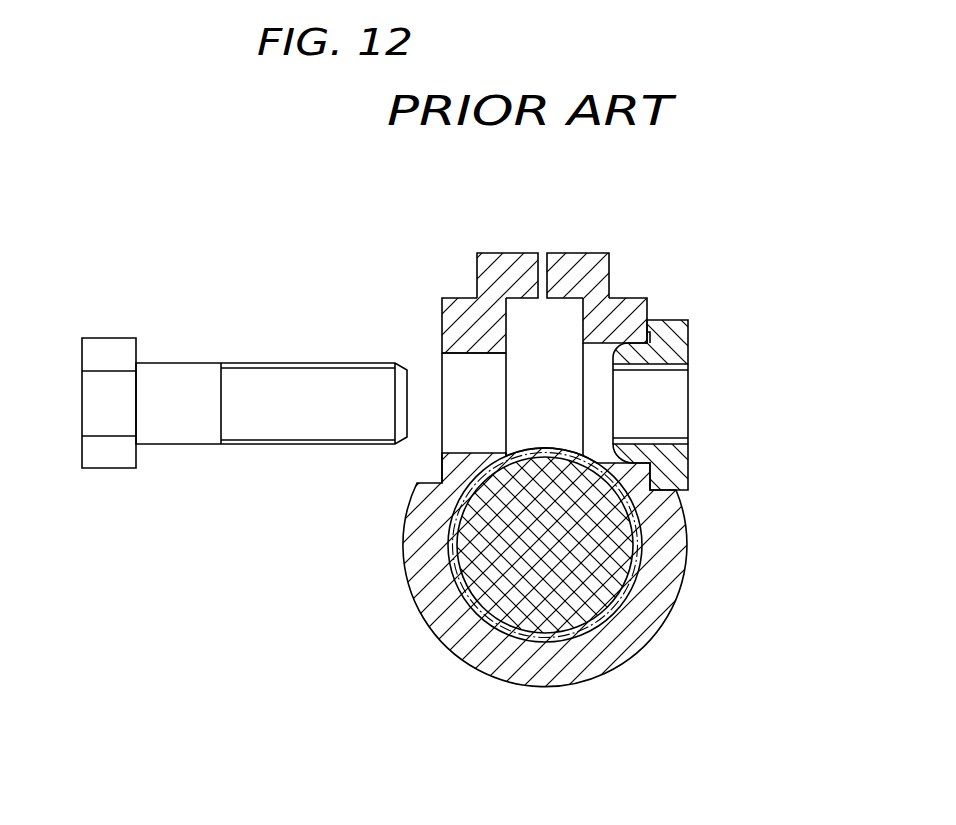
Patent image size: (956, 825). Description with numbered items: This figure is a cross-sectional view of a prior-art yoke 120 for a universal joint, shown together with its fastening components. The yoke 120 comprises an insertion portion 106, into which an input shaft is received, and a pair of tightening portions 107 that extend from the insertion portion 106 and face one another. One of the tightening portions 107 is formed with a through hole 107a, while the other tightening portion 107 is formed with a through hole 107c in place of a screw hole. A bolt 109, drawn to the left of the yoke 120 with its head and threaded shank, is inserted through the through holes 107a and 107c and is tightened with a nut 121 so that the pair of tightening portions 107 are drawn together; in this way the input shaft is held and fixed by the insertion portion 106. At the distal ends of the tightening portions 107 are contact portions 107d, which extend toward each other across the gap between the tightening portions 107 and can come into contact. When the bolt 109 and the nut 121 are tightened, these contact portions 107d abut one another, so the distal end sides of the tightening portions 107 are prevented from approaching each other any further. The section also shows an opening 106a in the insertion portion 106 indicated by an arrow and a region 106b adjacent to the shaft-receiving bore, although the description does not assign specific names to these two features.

The yoke 120 is at (298, 208).
The bolt 109 is at (188, 368).
The tightening portions 107 is at (450, 300).
The through hole 107a is at (453, 366).
The through hole 107c is at (592, 345).
The contact portions 107d is at (513, 258).
The insertion portion 106 is at (645, 640).
The bolt hole 106a is at (543, 423).
The pipe insertion hole 106b is at (483, 603).
The nut 121 is at (682, 338).